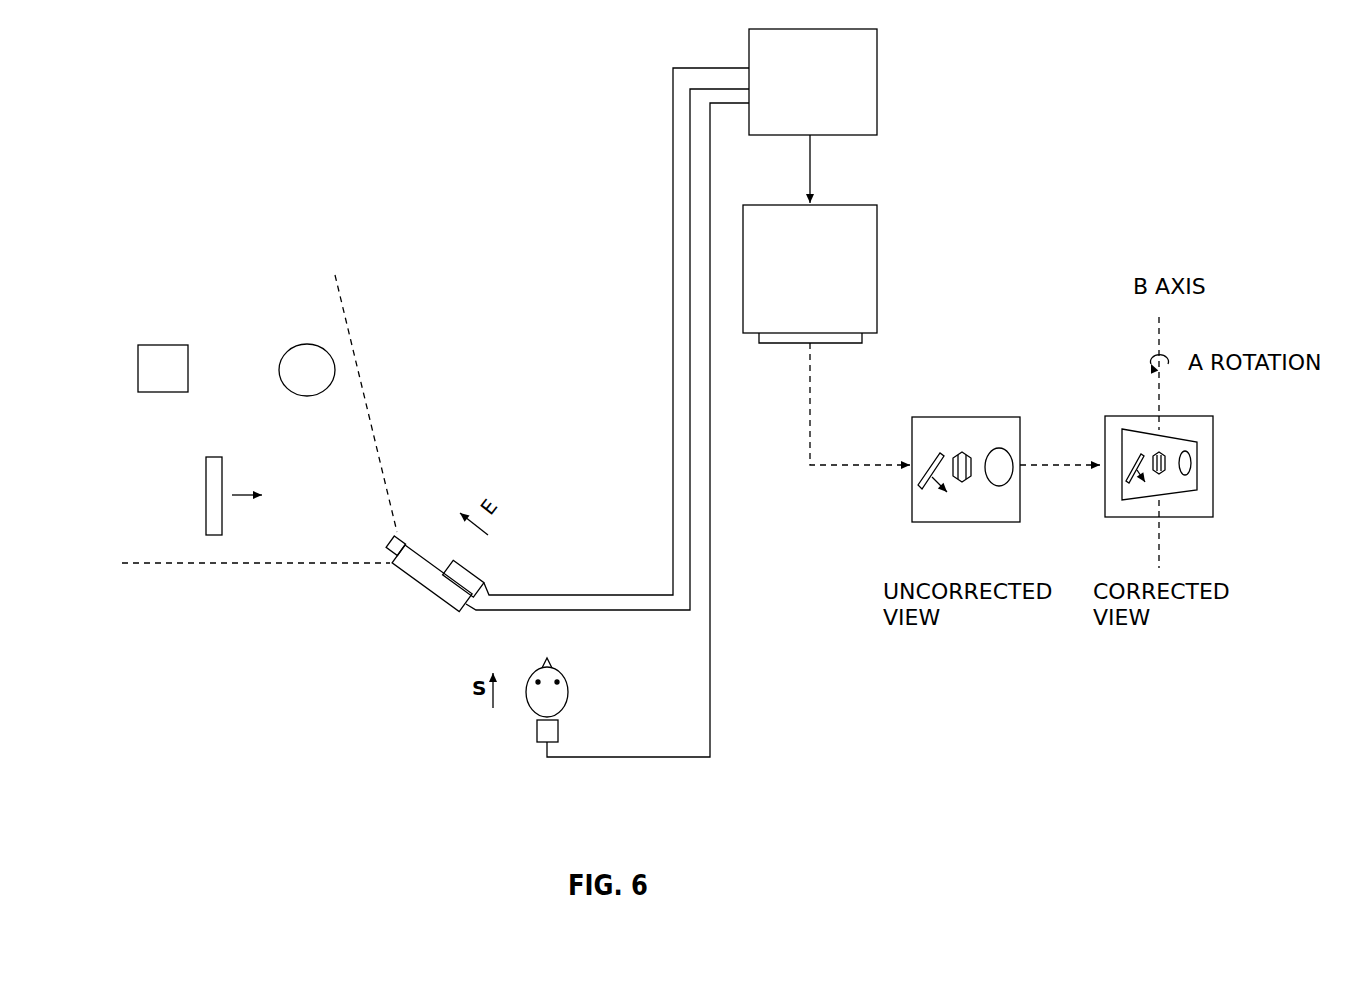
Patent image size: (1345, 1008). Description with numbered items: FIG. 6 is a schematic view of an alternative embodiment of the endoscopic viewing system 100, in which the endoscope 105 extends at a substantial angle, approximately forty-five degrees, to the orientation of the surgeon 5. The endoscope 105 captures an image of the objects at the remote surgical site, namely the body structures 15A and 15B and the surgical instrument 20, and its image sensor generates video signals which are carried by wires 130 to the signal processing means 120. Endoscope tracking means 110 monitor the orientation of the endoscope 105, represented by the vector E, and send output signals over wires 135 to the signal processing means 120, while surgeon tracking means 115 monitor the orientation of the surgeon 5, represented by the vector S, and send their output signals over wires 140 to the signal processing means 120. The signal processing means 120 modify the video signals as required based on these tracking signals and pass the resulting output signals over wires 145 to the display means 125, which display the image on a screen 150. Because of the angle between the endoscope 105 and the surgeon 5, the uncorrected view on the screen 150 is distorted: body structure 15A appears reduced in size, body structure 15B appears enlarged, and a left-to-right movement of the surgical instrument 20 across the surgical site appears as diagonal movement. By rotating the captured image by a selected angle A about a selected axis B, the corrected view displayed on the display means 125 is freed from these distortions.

The surgeon 5 is at (575, 704).
The body structure 15A is at (197, 342).
The body structure 15B is at (330, 343).
The surgical instrument 20 is at (200, 477).
The endoscopic viewing system 100 is at (857, 652).
The endoscope 105 is at (443, 605).
The endoscope tracking means 110 is at (474, 567).
The surgeon tracking means 115 is at (532, 737).
The signal processing means 120 is at (887, 82).
The display means 125 is at (892, 233).
The wires 130 is at (488, 615).
The wires 135 is at (598, 588).
The wires 140 is at (715, 705).
The wires 145 is at (820, 166).
The screen 150 is at (778, 358).